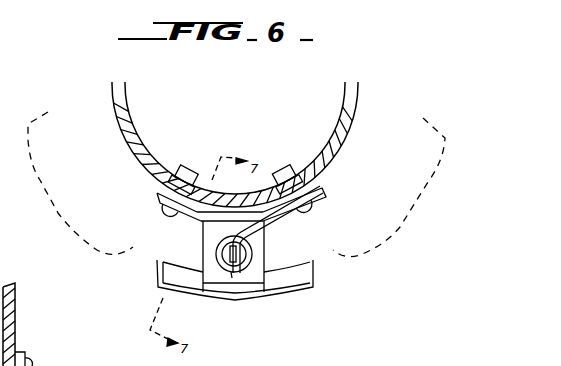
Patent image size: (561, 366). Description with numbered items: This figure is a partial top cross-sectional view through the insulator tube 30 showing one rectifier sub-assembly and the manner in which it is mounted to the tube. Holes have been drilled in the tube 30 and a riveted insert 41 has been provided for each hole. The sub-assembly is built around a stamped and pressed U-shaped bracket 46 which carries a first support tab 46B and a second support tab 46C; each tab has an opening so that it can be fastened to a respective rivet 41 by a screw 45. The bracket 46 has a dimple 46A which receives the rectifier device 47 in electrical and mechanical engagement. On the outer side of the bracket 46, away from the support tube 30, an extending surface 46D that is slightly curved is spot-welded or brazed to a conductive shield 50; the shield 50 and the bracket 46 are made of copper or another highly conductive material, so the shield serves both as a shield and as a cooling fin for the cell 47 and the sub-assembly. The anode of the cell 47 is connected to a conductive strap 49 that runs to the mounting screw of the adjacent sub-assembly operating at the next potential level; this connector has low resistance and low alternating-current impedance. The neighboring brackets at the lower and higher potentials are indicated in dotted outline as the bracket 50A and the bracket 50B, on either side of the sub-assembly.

The insulator tube 30 is at (127, 102).
The riveted insert 41 is at (183, 163).
The screw 45 is at (164, 216).
The U-shaped bracket 46 is at (235, 258).
The dimple 46A is at (247, 251).
The first support tab 46B is at (158, 194).
The second support tab 46C is at (323, 192).
The extending surface 46D is at (240, 290).
The rectifier device 47 is at (229, 273).
The conductive strap 49 is at (273, 222).
The conductive shield 50 is at (313, 287).
The bracket at potential P1 50A is at (40, 177).
The bracket at potential P3 50B is at (412, 217).